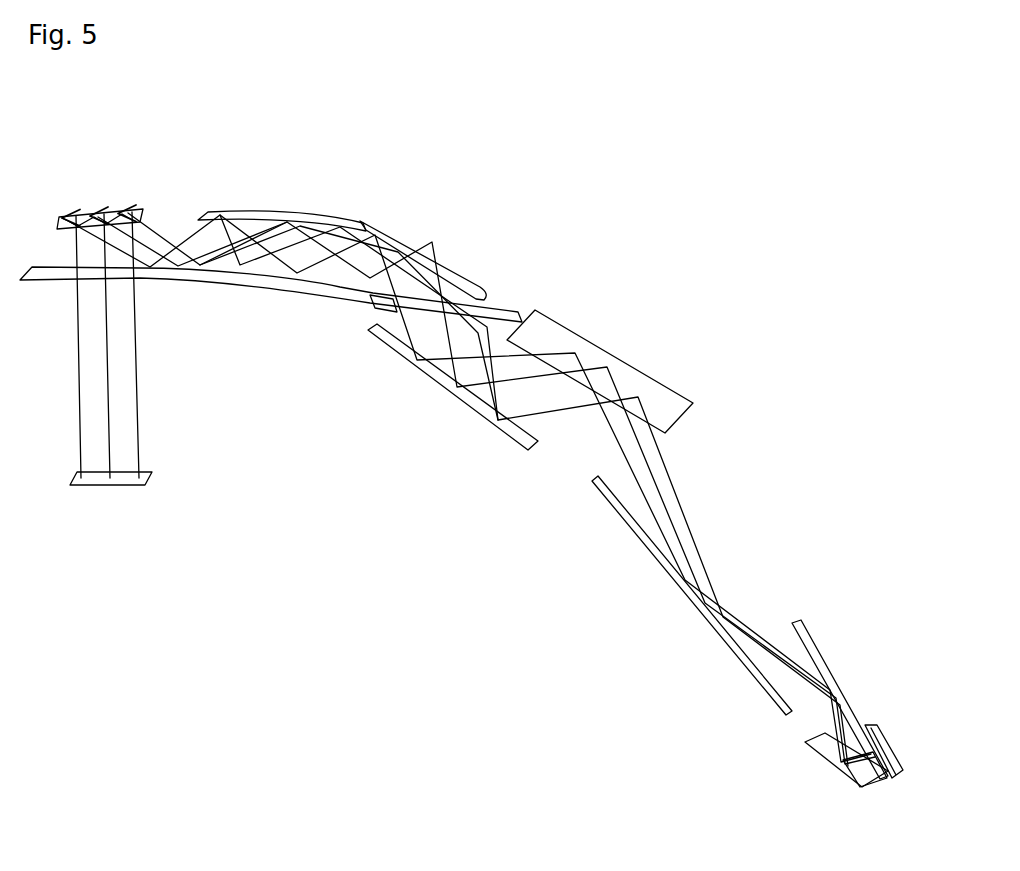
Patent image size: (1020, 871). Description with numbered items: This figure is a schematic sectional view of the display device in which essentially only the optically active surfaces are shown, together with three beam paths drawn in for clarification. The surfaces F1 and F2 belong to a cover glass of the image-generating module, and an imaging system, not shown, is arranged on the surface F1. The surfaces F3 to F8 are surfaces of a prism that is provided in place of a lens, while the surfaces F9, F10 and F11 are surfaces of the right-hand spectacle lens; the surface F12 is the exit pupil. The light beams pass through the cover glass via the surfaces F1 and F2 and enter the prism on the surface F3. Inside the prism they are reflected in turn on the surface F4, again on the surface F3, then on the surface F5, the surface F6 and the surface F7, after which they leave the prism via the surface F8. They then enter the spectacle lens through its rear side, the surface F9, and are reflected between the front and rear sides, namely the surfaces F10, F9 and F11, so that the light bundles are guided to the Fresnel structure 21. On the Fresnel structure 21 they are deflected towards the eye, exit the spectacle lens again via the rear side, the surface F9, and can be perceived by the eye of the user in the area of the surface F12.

The Fresnel structure 21 is at (113, 207).
The surface F1 is at (890, 743).
The surface F2 is at (847, 787).
The surface F3 is at (820, 653).
The surface F4 is at (825, 760).
The surface F5 is at (635, 537).
The surface F6 is at (563, 323).
The surface F7 is at (432, 378).
The surface F8 is at (375, 300).
The surface F9 is at (210, 281).
The surface F10 is at (421, 243).
The surface F11 is at (290, 210).
The surface F12 is at (100, 487).